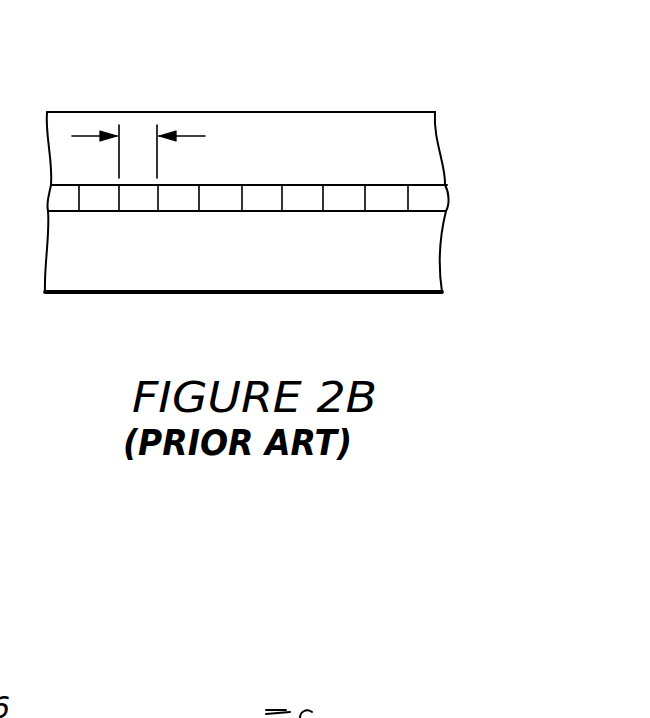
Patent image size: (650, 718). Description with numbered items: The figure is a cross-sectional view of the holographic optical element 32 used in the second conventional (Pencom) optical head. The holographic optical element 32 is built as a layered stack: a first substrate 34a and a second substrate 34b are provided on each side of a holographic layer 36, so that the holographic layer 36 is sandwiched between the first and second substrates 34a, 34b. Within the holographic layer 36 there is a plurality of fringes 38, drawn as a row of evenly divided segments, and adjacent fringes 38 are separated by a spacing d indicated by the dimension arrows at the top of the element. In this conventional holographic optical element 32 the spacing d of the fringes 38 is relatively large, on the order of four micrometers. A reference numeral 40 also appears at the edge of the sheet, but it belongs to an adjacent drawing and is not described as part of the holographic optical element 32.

The holographic optical element 32 is at (305, 148).
The first substrate 34a is at (436, 137).
The second substrate 34b is at (440, 248).
The holographic layer 36 is at (290, 226).
The fringes 38 is at (362, 198).
The structure of adjacent figure 40 is at (365, 717).